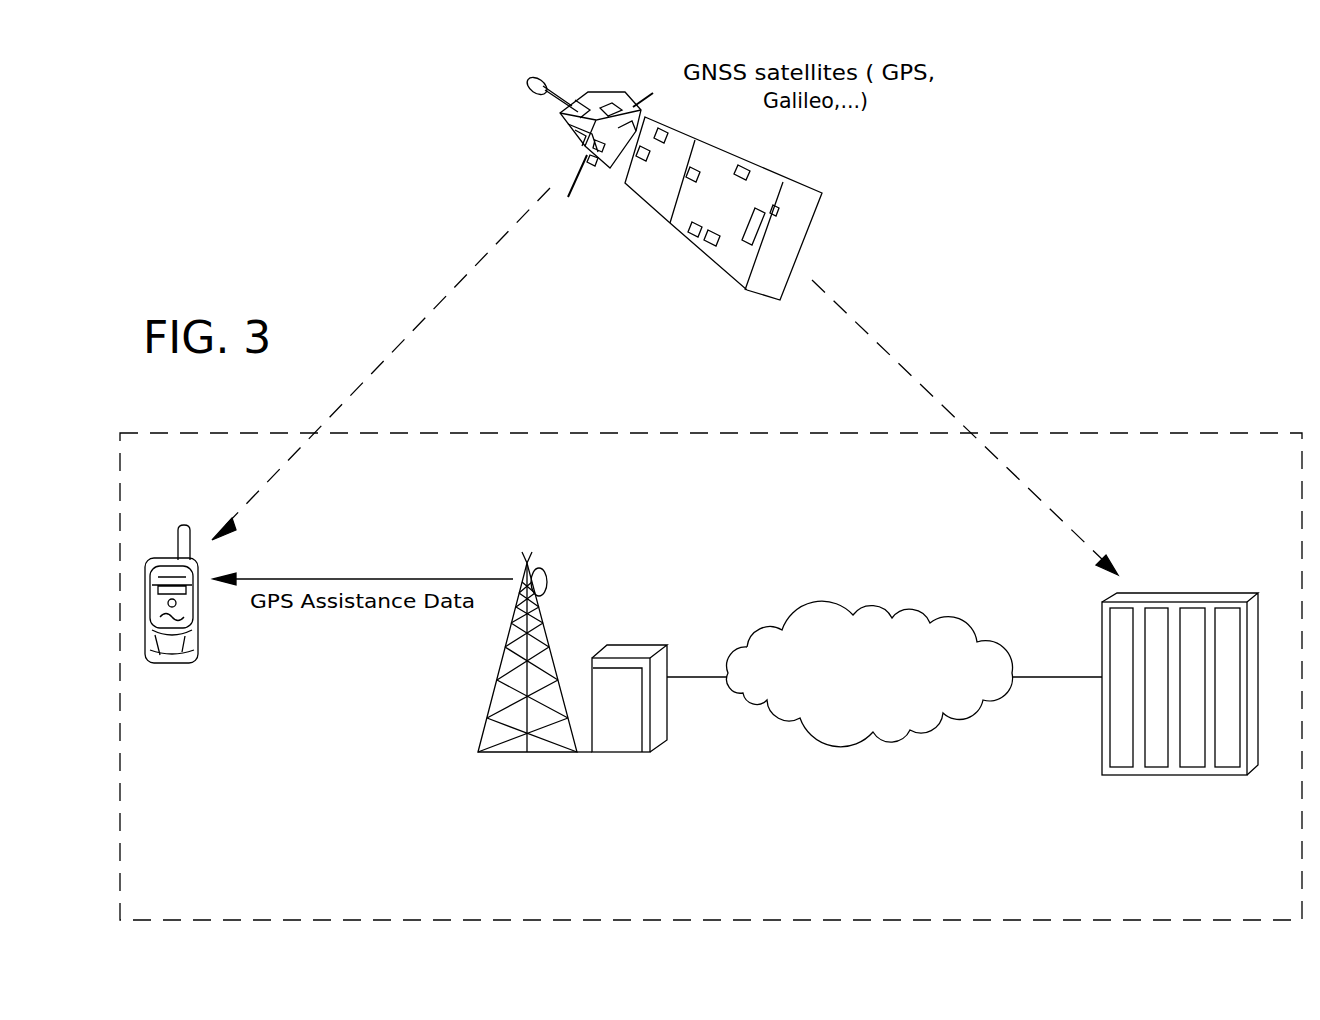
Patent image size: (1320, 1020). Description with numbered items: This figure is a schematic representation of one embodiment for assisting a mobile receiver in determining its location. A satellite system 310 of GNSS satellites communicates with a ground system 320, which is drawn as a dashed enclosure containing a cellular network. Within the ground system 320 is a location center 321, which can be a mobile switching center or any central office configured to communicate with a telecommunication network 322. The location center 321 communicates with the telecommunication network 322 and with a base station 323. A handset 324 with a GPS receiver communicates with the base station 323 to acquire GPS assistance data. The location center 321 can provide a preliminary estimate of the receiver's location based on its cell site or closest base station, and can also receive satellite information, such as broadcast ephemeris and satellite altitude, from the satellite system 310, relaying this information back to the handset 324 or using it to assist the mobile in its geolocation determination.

The satellite system 310 is at (845, 243).
The ground system 320 is at (1128, 432).
The location center 321 is at (1162, 578).
The telecommunication network 322 is at (833, 610).
The base station 323 is at (545, 560).
The handset 324 is at (165, 550).